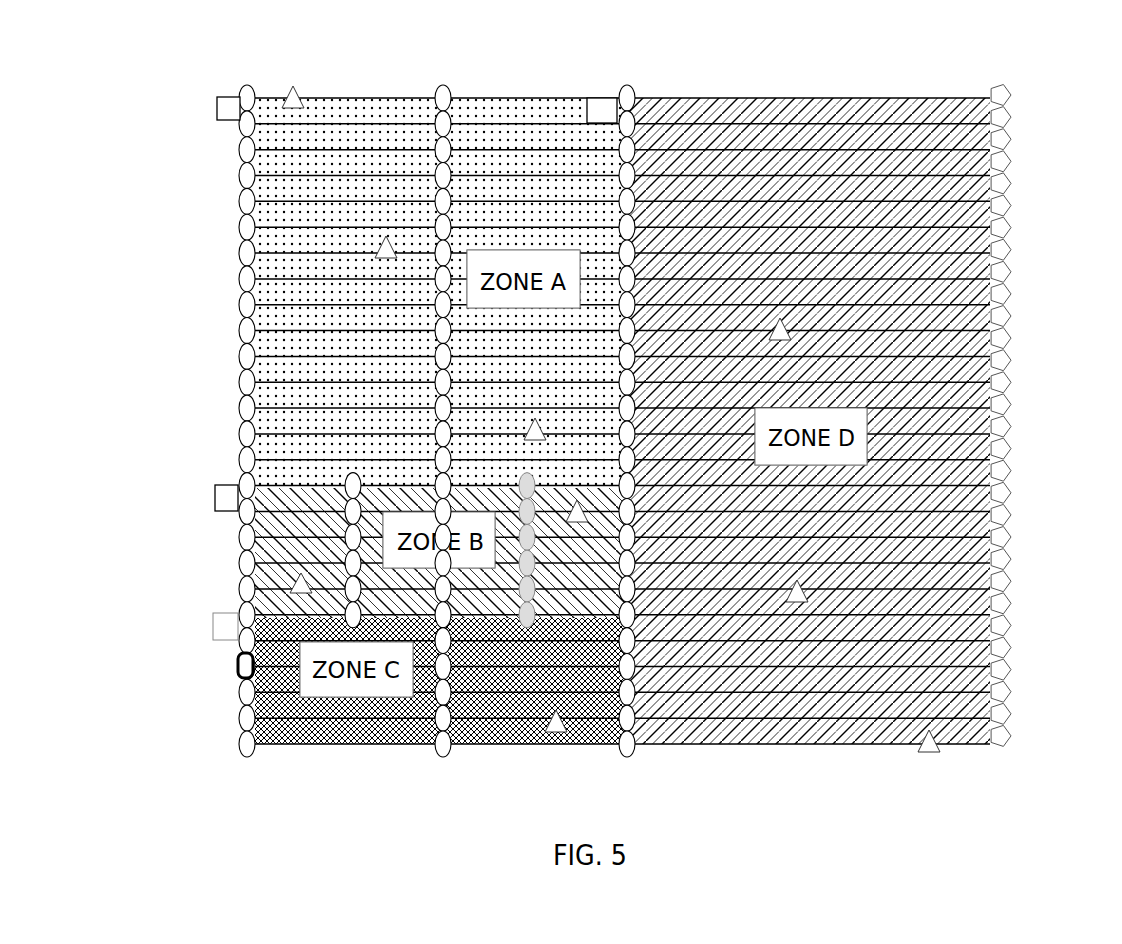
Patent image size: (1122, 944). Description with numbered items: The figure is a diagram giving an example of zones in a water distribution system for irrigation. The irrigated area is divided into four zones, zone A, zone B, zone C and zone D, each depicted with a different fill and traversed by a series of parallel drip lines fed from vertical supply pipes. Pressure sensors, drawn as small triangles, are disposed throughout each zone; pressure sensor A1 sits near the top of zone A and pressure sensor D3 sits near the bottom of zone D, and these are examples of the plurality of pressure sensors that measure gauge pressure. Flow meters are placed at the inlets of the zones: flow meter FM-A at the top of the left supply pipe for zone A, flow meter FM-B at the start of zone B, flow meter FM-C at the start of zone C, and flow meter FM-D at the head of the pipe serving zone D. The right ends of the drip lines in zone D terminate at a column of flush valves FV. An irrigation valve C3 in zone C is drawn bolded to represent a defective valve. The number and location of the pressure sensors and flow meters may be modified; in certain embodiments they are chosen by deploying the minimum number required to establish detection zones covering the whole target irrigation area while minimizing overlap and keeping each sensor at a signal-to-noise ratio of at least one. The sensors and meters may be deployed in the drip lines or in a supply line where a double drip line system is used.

The zone A is at (441, 293).
The zone B is at (441, 553).
The zone C is at (441, 681).
The zone D is at (808, 421).
The pressure sensor A1 is at (290, 86).
The pressure sensor D3 is at (929, 753).
The irrigation valve C3 is at (238, 676).
The flow meter A FM-A is at (232, 96).
The flow meter B FM-B is at (230, 485).
The flow meter C FM-C is at (230, 613).
The flow meter D FM-D is at (604, 97).
The flush valve FV is at (1001, 95).